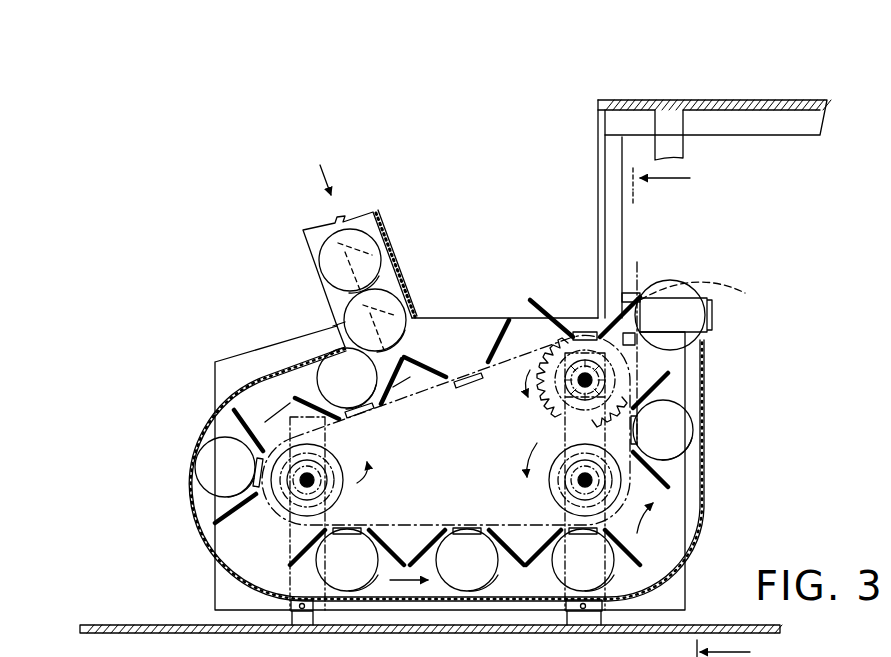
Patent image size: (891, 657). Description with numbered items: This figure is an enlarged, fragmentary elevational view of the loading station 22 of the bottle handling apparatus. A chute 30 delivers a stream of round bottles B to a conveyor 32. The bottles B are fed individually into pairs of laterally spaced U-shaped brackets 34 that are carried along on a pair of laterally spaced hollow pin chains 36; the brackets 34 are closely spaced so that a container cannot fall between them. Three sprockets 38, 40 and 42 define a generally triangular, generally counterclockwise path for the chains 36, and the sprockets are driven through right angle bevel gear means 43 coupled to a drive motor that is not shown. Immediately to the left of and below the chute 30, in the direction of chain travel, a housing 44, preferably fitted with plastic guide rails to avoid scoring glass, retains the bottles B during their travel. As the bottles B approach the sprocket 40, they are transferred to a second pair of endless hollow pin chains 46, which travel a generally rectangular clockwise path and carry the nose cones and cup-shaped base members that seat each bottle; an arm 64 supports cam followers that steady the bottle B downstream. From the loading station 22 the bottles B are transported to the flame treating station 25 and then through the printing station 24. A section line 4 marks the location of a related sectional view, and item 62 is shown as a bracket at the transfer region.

The loading station 22 is at (185, 362).
The flame treating station 25 is at (772, 96).
The section line 4- 4 is at (704, 410).
The printing station 24 is at (838, 656).
The chute 30 is at (372, 228).
The conveyor 32 is at (310, 370).
The housing 44 is at (198, 530).
The hollow pin chains 36 is at (412, 400).
The sprocket 38 is at (283, 518).
The sprocket 40 is at (695, 495).
The sprocket 42 is at (657, 390).
The right angle bevel gear means 43 is at (580, 320).
The hollow pin chains 46 is at (673, 299).
The arm 64 is at (708, 290).
The brackets 62 is at (622, 293).
The U-shaped brackets 34 is at (432, 352).
The bottles B is at (392, 254).